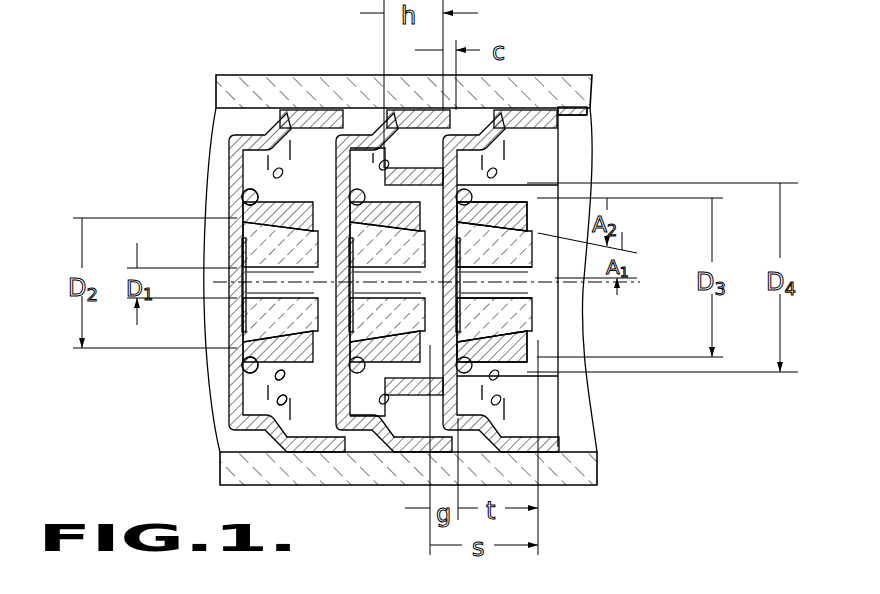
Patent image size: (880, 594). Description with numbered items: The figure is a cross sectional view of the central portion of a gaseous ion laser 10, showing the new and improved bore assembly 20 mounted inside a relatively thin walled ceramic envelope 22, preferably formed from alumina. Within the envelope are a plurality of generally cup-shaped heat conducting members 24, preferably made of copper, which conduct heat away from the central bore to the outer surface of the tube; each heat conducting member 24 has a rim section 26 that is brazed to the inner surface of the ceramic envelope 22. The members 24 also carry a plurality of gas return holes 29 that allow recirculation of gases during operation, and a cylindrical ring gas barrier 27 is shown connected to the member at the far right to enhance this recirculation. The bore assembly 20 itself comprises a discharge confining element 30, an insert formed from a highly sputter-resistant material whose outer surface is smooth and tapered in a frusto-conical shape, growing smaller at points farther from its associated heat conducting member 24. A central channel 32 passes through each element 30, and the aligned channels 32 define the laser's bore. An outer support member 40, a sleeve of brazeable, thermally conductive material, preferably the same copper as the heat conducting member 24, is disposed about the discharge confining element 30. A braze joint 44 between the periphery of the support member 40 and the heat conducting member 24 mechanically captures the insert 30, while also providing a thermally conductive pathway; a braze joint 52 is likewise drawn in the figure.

The gaseous ion laser 10 is at (568, 70).
The bore assembly 20 is at (311, 190).
The ceramic envelope 22 is at (250, 85).
The heat conducting member 24 is at (548, 138).
The rim section 26 is at (586, 111).
The ring gas barrier 27 is at (408, 396).
The gas return holes 29 is at (285, 381).
The discharge confining element 30 is at (538, 233).
The central channel 32 is at (523, 289).
The outer support member 40 is at (540, 345).
The braze joint 44 is at (246, 192).
The roller 52 is at (245, 367).